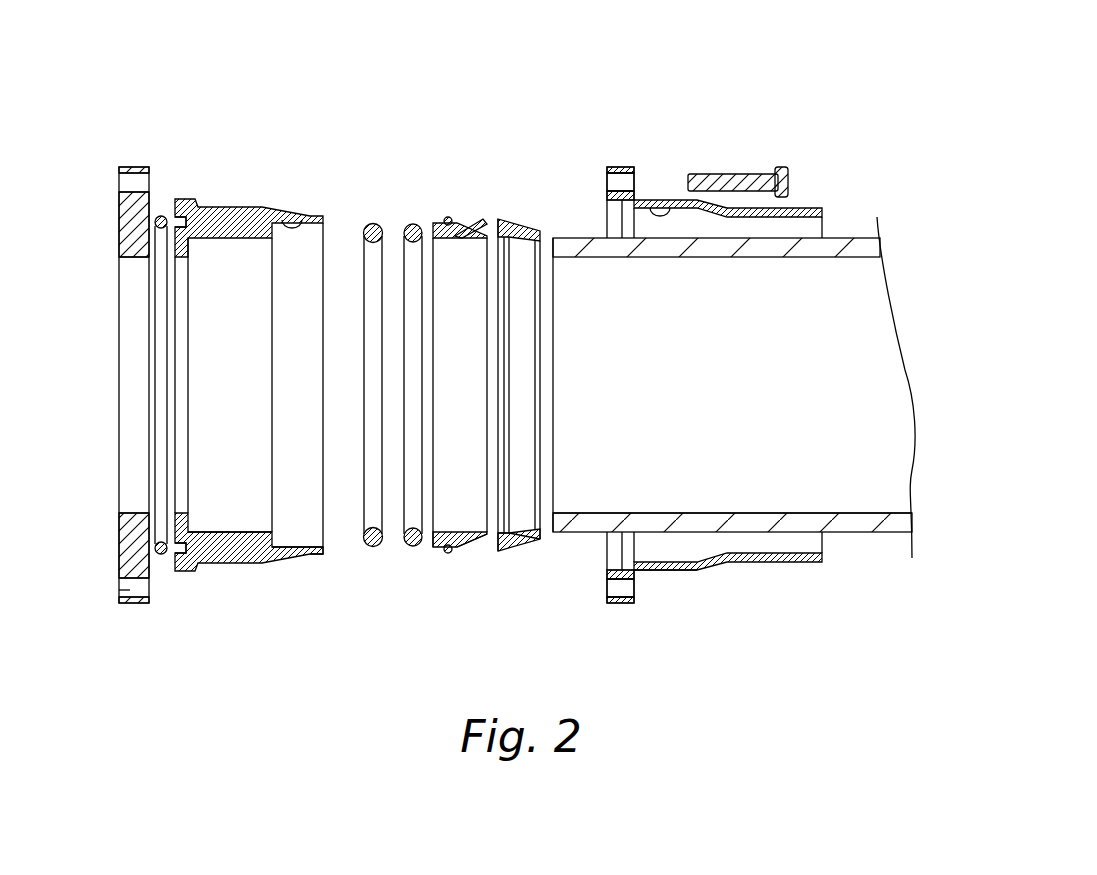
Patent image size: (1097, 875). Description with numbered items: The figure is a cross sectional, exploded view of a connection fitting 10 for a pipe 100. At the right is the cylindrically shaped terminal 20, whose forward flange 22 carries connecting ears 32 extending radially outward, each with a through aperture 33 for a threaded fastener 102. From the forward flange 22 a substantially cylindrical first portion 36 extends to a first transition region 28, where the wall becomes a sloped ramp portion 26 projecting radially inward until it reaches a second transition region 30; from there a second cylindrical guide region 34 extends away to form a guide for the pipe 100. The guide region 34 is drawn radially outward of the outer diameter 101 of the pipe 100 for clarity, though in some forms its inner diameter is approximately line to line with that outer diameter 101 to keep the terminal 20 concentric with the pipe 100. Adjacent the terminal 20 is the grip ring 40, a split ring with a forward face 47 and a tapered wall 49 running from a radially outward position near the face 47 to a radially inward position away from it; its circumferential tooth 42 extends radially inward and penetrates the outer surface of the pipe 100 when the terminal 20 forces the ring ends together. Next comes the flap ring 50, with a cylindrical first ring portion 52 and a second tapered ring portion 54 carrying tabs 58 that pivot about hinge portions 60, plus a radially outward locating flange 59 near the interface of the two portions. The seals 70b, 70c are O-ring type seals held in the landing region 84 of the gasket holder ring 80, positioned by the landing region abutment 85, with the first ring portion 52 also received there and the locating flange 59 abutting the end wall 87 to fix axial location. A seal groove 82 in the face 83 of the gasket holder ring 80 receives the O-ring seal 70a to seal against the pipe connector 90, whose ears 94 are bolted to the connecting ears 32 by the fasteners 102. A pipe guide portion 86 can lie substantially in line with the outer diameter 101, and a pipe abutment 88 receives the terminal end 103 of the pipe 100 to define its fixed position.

The connection fitting 10 is at (553, 108).
The terminal 20 is at (803, 205).
The forward flange 22 is at (608, 578).
The sloped ramp portion 26 is at (710, 553).
The first transition region 28 is at (700, 567).
The second transition region 30 is at (735, 563).
The connecting ear 32 is at (622, 604).
The through aperture 33 is at (625, 183).
The cylindrical portion 34 is at (822, 215).
The cylindrical portion 36 is at (660, 206).
The grip ring 40 is at (526, 222).
The tooth 42 is at (507, 522).
The forward face 47 is at (498, 552).
The tapered wall 49 is at (520, 546).
The flap ring 50 is at (437, 222).
The first ring portion 52 is at (433, 548).
The second tapered ring portion 54 is at (480, 543).
The tab 58 is at (500, 217).
The locating flange 59 is at (449, 216).
The hinge portion 60 is at (476, 216).
The O-ring seal 70a is at (158, 216).
The seal 70b is at (372, 223).
The seal 70c is at (411, 223).
The gasket holder ring 80 is at (228, 207).
The seal groove 82 is at (185, 212).
The face 83 is at (173, 570).
The landing region 84 is at (290, 220).
The landing region abutment 85 is at (276, 547).
The pipe guide portion 86 is at (226, 532).
The end wall 87 is at (323, 555).
The pipe abutment 88 is at (190, 245).
The pipe connector 90 is at (118, 228).
The ear 94 is at (123, 588).
The pipe 100 is at (740, 390).
The outer diameter 101 is at (854, 228).
The threaded fastener 102 is at (742, 182).
The terminal end 103 is at (548, 530).